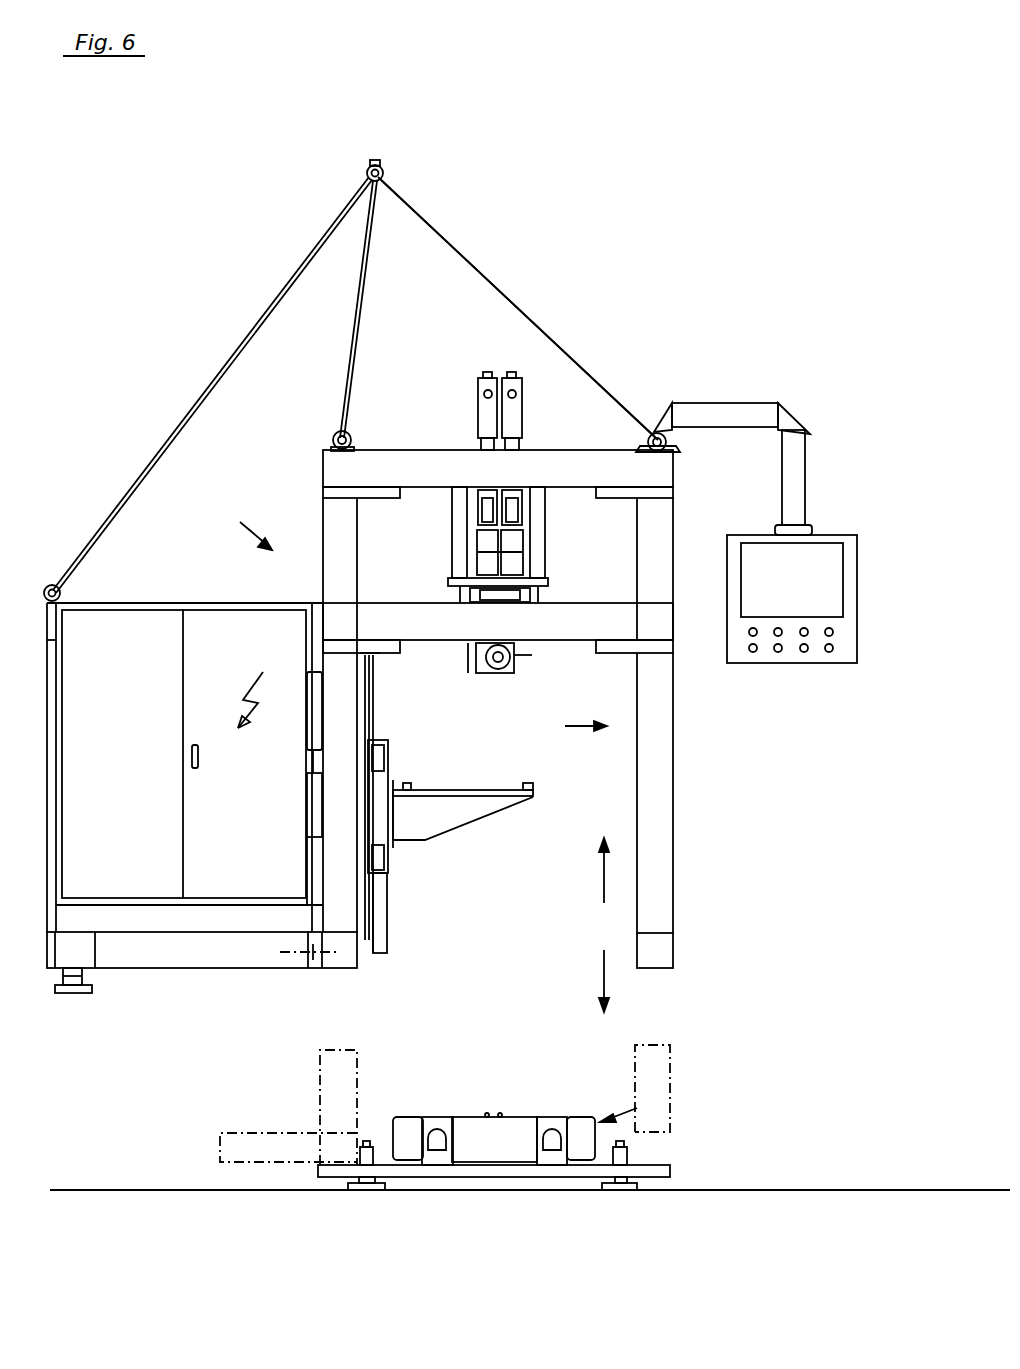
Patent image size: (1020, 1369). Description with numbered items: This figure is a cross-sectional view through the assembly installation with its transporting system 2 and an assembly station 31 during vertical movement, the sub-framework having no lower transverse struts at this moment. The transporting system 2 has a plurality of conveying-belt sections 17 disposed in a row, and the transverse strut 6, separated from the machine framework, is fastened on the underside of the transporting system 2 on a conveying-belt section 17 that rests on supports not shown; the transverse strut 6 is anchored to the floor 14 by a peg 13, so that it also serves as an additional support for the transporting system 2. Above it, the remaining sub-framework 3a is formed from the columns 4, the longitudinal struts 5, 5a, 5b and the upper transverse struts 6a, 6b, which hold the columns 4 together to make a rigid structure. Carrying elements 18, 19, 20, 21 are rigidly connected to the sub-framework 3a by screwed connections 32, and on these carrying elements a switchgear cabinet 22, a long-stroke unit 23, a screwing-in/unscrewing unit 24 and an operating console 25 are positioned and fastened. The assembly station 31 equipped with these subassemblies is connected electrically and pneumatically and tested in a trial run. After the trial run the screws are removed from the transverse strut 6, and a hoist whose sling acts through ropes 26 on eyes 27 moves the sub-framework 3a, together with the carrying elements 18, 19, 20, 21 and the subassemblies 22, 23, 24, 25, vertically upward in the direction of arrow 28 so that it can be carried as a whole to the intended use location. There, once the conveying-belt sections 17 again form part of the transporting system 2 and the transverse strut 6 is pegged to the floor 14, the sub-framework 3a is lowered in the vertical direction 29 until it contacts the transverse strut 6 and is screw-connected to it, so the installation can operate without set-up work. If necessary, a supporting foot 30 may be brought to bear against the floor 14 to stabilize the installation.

The transporting system 2 is at (627, 1109).
The sub-framework 3a is at (563, 726).
The column 4 is at (652, 703).
The longitudinal strut 5 is at (657, 950).
The longitudinal strut 5a is at (660, 623).
The longitudinal strut 5b is at (660, 473).
The transverse strut 6 is at (650, 1170).
The transverse strut 6a is at (388, 622).
The transverse strut 6b is at (398, 470).
The peg 13 is at (356, 1146).
The floor 14 is at (828, 1190).
The conveying-belt section 17 is at (508, 1150).
The carrying element 18 is at (155, 956).
The carrying element 19 is at (372, 688).
The carrying element 20 is at (535, 534).
The carrying element 21 is at (790, 458).
The switchgear cabinet 22 is at (136, 633).
The long-stroke unit 23 is at (385, 858).
The screwing-in/unscrewing unit 24 is at (512, 410).
The operating console 25 is at (830, 560).
The ropes 26 is at (262, 330).
The eyes 27 is at (62, 592).
The arrow 28 is at (603, 869).
The vertical direction 29 is at (600, 975).
The supporting foot 30 is at (70, 994).
The assembly station 31 is at (240, 526).
The screwed connections 32 is at (280, 952).